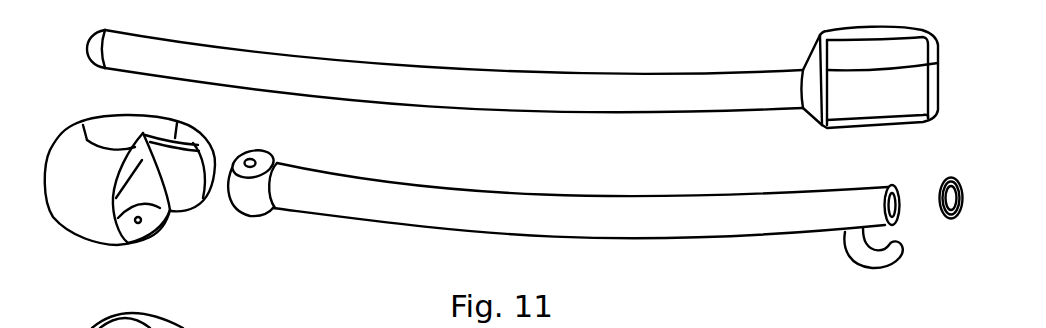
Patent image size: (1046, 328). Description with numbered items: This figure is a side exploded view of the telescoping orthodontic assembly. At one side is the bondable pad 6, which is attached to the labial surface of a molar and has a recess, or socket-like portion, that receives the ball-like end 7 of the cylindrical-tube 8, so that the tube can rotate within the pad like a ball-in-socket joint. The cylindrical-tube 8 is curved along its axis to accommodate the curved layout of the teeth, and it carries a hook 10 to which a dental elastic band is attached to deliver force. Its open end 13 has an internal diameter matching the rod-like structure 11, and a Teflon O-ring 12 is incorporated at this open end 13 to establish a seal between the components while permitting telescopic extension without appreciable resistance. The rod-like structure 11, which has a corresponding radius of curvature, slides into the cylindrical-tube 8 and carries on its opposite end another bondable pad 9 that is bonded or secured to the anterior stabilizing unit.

The bondable pad 6 is at (142, 177).
The end 7 is at (276, 163).
The cylindrical-tube 8 is at (602, 207).
The bondable pad 9 is at (867, 112).
The hook 10 is at (850, 269).
The rod-like structure 11 is at (623, 87).
The O-ring 12 is at (950, 232).
The open end 13 is at (896, 186).